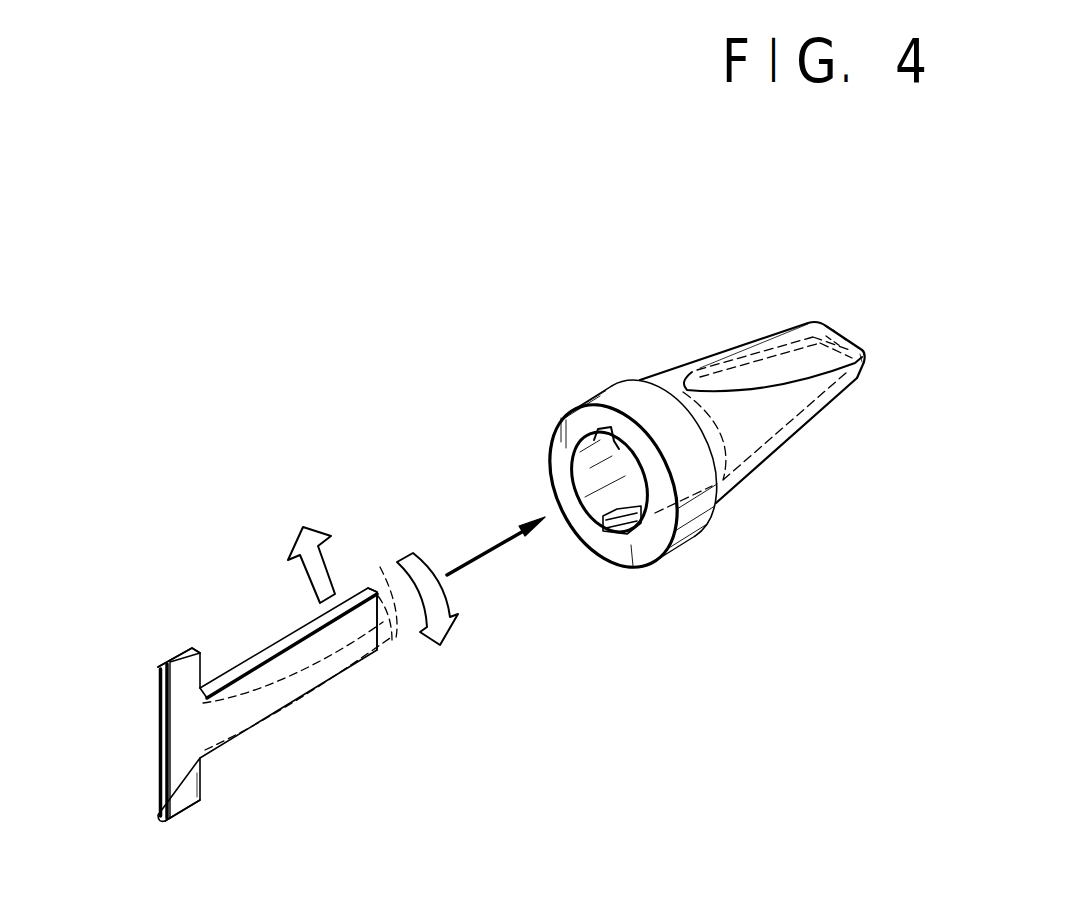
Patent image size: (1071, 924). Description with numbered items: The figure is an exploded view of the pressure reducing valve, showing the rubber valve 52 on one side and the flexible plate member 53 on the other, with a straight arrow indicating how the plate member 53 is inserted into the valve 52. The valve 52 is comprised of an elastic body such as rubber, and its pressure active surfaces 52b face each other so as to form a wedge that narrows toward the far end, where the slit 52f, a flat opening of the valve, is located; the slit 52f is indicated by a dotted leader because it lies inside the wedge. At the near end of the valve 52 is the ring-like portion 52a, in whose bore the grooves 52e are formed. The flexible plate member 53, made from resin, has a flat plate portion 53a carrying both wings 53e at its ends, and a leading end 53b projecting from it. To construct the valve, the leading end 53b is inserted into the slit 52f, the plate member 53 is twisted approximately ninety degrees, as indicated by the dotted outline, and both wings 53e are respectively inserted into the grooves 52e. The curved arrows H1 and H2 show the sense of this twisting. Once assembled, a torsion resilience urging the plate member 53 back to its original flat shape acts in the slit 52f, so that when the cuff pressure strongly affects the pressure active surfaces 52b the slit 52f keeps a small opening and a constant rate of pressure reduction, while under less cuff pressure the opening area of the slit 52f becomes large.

The valve 52 is at (666, 362).
The flange ring of nozzle 52a is at (692, 520).
The pressure active surfaces 52b is at (758, 353).
The grooves 52e is at (608, 428).
The slit 52f is at (835, 333).
The flexible plate member 53 is at (243, 663).
The plate portion of key 53a is at (183, 737).
The leading end 53b is at (383, 597).
The wings 53e is at (177, 672).
The rotation direction H1 is at (413, 553).
The rotation direction H2 is at (300, 575).